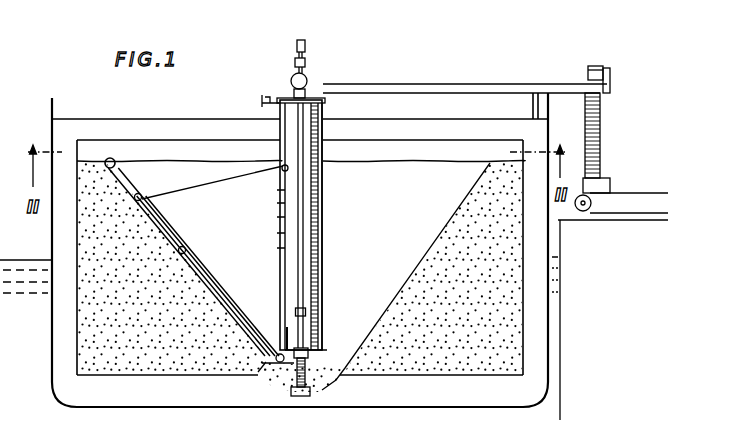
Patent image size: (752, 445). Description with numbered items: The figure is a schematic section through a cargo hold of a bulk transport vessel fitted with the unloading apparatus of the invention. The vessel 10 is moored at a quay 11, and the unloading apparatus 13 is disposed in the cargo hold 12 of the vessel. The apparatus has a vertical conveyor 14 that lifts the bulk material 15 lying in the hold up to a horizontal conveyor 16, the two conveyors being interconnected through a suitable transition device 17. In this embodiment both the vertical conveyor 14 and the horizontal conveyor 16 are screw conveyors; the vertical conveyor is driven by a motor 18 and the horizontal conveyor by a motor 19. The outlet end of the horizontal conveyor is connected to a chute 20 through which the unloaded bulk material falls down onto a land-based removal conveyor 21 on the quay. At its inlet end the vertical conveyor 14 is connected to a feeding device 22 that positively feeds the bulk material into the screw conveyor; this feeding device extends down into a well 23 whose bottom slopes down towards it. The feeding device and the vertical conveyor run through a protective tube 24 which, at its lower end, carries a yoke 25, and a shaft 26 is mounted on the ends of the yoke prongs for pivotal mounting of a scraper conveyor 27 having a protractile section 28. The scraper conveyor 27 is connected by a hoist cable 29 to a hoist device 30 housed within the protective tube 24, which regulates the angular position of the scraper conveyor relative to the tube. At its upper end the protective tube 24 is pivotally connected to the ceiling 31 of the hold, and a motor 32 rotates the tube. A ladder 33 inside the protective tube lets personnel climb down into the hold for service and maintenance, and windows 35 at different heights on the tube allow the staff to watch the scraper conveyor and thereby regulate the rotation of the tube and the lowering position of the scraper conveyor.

The vessel 10 is at (52, 352).
The quay 11 is at (631, 291).
The cargo hold 12 is at (75, 237).
The unloading apparatus 13 is at (284, 99).
The vertical conveyor 14 is at (306, 274).
The bulk material 15 is at (100, 318).
The horizontal conveyor 16 is at (434, 83).
The transition device 17 is at (308, 78).
The motor 18 is at (306, 51).
The motor 19 is at (589, 70).
The chute 20 is at (600, 132).
The land-based removal conveyor 21 is at (629, 193).
The feeding device 22 is at (323, 360).
The well 23 is at (290, 397).
The protective tube 24 is at (323, 212).
The yoke 25 is at (287, 327).
The shaft 26 is at (262, 370).
The scraper conveyor 27 is at (203, 265).
The protractile section 28 is at (115, 160).
The hoist cable 29 is at (204, 185).
The hoist device 30 is at (288, 168).
The ceiling 31 is at (99, 120).
The motor 32 is at (262, 101).
The ladder 33 is at (321, 240).
The windows 35 is at (278, 248).